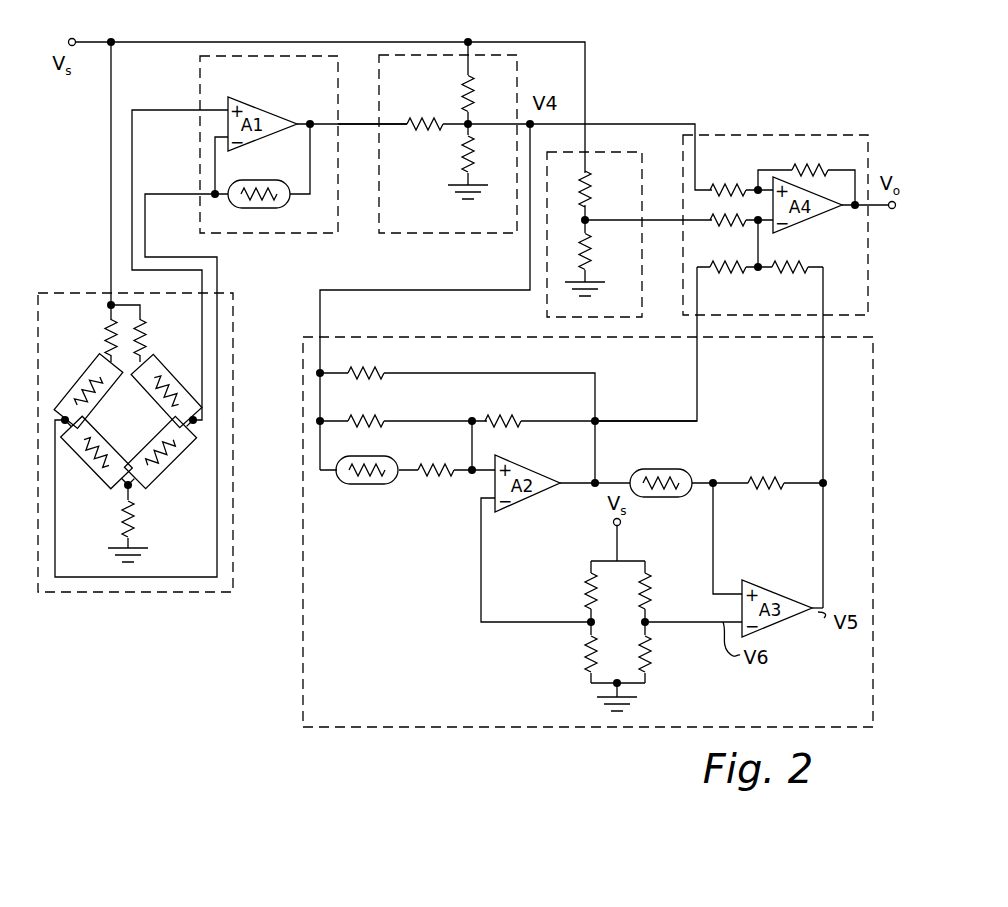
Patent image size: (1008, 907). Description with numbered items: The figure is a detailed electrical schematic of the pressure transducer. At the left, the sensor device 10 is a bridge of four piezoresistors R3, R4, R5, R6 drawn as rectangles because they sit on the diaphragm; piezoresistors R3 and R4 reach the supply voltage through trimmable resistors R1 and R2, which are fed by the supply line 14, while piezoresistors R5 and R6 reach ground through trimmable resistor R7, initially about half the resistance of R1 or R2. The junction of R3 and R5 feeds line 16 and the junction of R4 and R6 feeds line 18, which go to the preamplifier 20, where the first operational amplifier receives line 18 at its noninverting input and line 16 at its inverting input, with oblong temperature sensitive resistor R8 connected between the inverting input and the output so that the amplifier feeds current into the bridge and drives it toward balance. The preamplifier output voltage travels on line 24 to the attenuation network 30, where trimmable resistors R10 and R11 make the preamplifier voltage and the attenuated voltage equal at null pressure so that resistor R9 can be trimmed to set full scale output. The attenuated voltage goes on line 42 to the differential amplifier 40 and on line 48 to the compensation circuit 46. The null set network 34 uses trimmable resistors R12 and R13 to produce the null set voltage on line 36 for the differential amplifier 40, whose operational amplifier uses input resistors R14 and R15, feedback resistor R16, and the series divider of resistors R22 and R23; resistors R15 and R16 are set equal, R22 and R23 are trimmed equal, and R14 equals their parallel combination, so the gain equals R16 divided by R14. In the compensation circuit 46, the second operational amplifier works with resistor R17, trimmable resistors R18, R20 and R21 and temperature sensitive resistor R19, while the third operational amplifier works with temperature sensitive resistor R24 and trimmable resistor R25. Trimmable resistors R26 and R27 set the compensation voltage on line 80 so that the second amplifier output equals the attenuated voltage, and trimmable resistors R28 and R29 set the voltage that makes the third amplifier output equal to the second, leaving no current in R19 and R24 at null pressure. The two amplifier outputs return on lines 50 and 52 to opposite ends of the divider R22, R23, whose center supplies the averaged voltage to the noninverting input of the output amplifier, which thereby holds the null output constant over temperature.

The sensor device 10 is at (176, 592).
The supply line 14 is at (109, 201).
The line 16 is at (146, 254).
The line 18 is at (182, 125).
The preamplifier 20 is at (262, 236).
The line 24 is at (358, 92).
The attenuation network 30 is at (410, 236).
The null set network 34 is at (547, 300).
The line 36 is at (663, 239).
The differential amplifier 40 is at (746, 135).
The line 42 is at (609, 124).
The compensation circuit 46 is at (365, 732).
The line 48 is at (357, 290).
The line 50 is at (697, 372).
The line 52 is at (823, 407).
The line 80 is at (510, 640).
The trimmable resistor R1 is at (95, 338).
The trimmable resistor R2 is at (157, 338).
The piezoresistor R3 is at (88, 391).
The piezoresistor R4 is at (166, 390).
The piezoresistor R5 is at (93, 452).
The piezoresistor R6 is at (161, 452).
The trimmable resistor R7 is at (145, 516).
The temperature sensitive resistor R8 is at (259, 182).
The resistor R9 is at (425, 138).
The trimmable resistor R10 is at (447, 94).
The trimmable resistor R11 is at (490, 154).
The trimmable resistor R12 is at (608, 189).
The trimmable resistor R13 is at (608, 252).
The trimmable resistor R14 is at (727, 178).
The trimmable resistor R15 is at (727, 232).
The trimmable resistor R16 is at (811, 158).
The resistor R17 is at (365, 361).
The trimmable resistor R18 is at (365, 409).
The temperature sensitive resistor R19 is at (367, 482).
The trimmable resistor R20 is at (435, 458).
The trimmable resistor R21 is at (504, 409).
The resistor R22 is at (727, 280).
The resistor R23 is at (790, 280).
The temperature sensitive resistor R24 is at (661, 471).
The trimmable resistor R25 is at (765, 470).
The trimmable resistor R26 is at (567, 591).
The trimmable resistor R27 is at (567, 654).
The trimmable resistor R28 is at (668, 591).
The trimmable resistor R29 is at (668, 654).